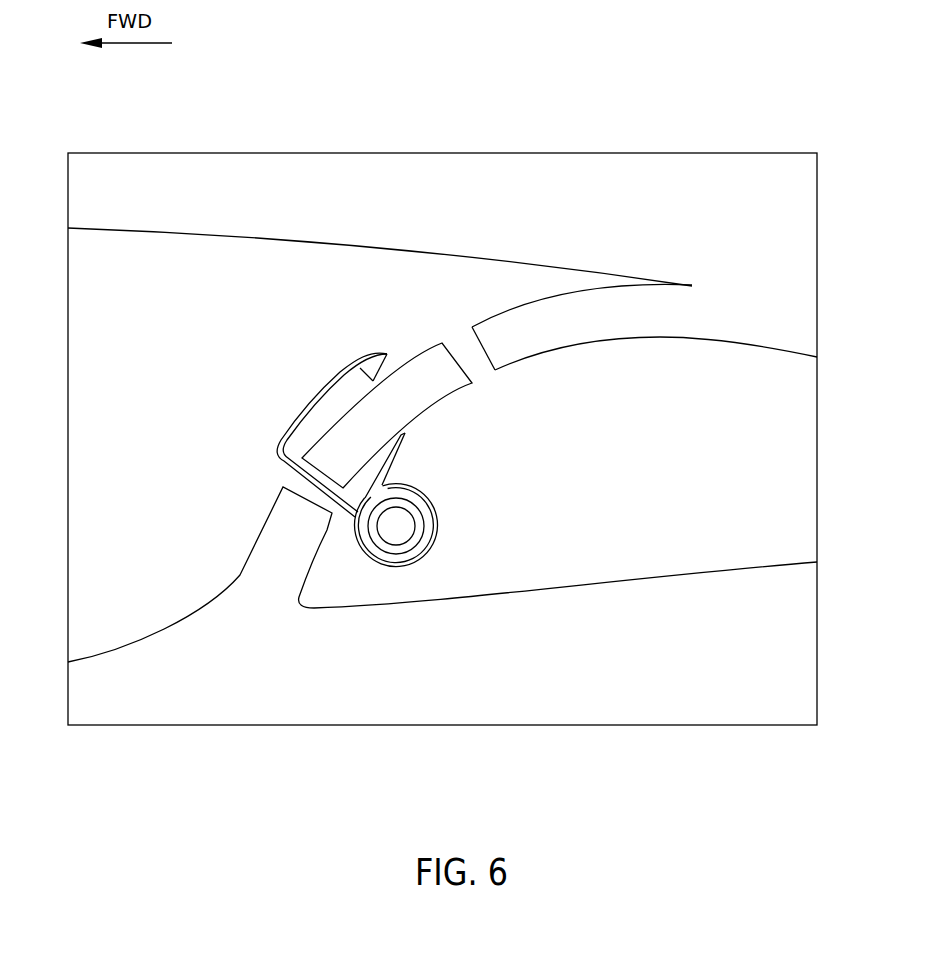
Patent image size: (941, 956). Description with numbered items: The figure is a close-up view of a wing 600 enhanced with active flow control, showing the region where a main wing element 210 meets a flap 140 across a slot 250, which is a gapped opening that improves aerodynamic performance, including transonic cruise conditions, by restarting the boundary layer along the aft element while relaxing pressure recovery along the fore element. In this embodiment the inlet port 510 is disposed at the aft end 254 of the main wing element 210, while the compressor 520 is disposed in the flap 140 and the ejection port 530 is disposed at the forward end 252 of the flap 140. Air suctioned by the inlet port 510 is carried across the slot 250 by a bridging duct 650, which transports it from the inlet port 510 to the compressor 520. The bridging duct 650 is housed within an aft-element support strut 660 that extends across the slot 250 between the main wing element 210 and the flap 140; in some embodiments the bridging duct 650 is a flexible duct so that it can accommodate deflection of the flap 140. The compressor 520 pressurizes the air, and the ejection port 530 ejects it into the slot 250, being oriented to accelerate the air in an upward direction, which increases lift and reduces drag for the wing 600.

The wing 600 is at (295, 173).
The main wing element 210 is at (443, 253).
The aft end 254 is at (555, 297).
The forward end 252 is at (557, 354).
The flap 140 is at (820, 338).
The slot 250 is at (687, 307).
The aft-element support strut 660 is at (472, 357).
The bridging duct 650 is at (288, 425).
The inlet port 510 is at (368, 375).
The ejection port 530 is at (412, 433).
The compressor 520 is at (437, 507).